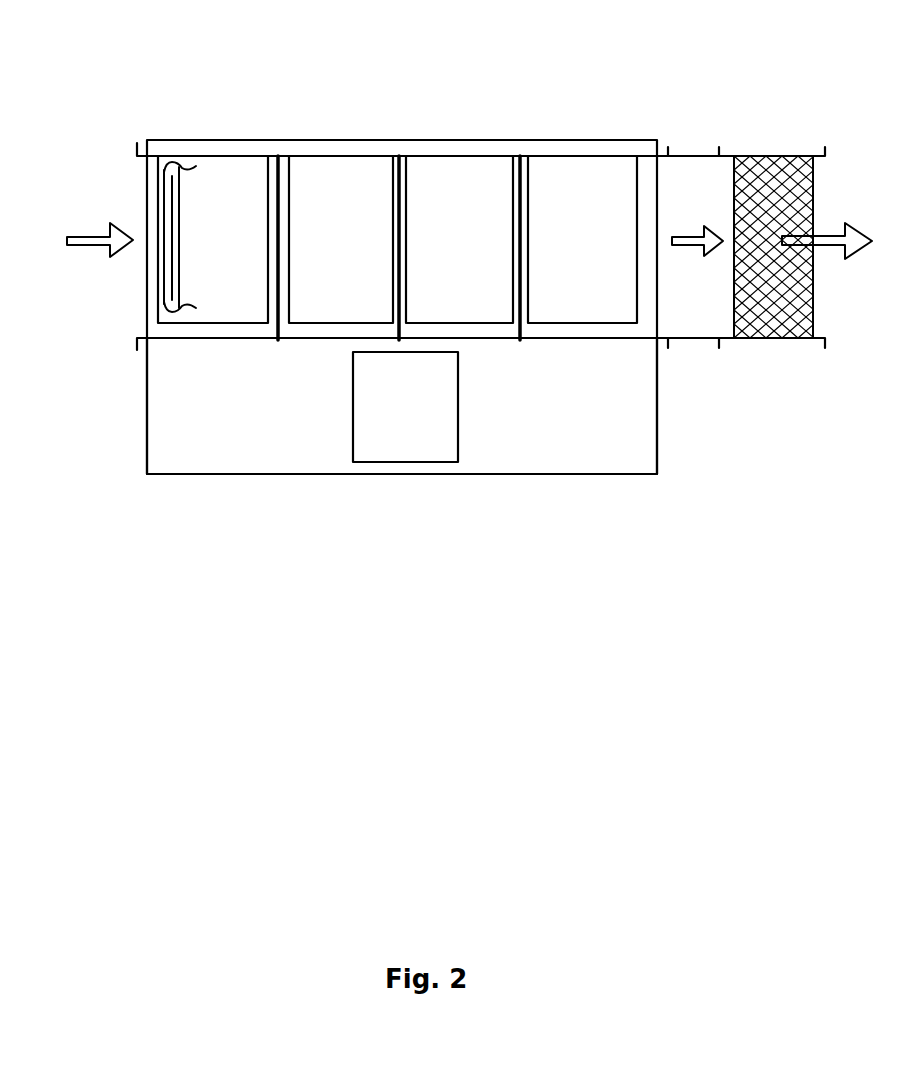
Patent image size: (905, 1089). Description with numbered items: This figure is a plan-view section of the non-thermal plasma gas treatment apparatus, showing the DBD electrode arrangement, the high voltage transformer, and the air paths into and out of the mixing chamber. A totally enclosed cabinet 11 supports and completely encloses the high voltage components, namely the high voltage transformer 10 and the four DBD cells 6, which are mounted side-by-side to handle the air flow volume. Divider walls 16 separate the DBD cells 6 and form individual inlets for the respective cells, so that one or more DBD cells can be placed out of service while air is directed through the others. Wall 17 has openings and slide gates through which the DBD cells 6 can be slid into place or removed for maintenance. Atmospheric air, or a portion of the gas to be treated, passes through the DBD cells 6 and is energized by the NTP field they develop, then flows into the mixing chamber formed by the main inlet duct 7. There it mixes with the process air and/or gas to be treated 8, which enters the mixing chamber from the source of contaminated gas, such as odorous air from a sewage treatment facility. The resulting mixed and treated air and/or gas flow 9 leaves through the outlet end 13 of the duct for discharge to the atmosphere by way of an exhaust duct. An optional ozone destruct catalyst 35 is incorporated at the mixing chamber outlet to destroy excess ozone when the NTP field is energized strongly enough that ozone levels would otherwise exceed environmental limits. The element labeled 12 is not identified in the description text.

The DBD cells 6 is at (336, 212).
The main inlet duct 7 is at (151, 310).
The process air and/or gas to be treated 8 is at (84, 234).
The mixed and treated air and/or gas flow 9 is at (693, 222).
The high voltage transformer 10 is at (386, 438).
The cabinet 11 is at (143, 423).
The upper housing wall 12 is at (132, 146).
The outlet end 13 is at (688, 346).
The divider walls 16 is at (518, 150).
The wall 17 is at (647, 330).
The ozone destruct catalyst 35 is at (764, 182).